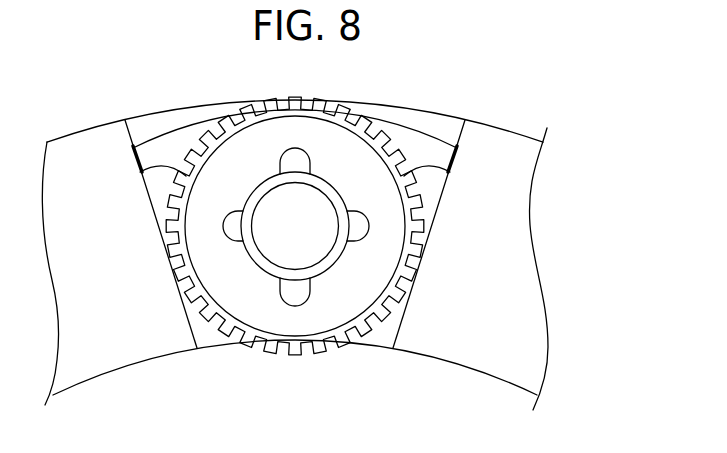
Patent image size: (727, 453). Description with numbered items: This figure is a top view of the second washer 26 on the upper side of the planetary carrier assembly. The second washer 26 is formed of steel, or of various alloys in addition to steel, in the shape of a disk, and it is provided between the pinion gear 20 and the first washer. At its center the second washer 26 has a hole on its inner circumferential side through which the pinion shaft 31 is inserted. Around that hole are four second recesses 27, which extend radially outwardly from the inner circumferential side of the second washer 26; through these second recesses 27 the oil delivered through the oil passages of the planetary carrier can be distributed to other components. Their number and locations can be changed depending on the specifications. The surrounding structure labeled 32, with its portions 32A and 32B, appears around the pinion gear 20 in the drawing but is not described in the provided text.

The pinion gear 20 is at (297, 356).
The second washer 26 is at (344, 298).
The second recesses 27 is at (293, 290).
The pinion shaft 31 is at (258, 262).
The housing 32 is at (306, 244).
The housing segment 32A is at (504, 146).
The housing segment 32B is at (87, 145).